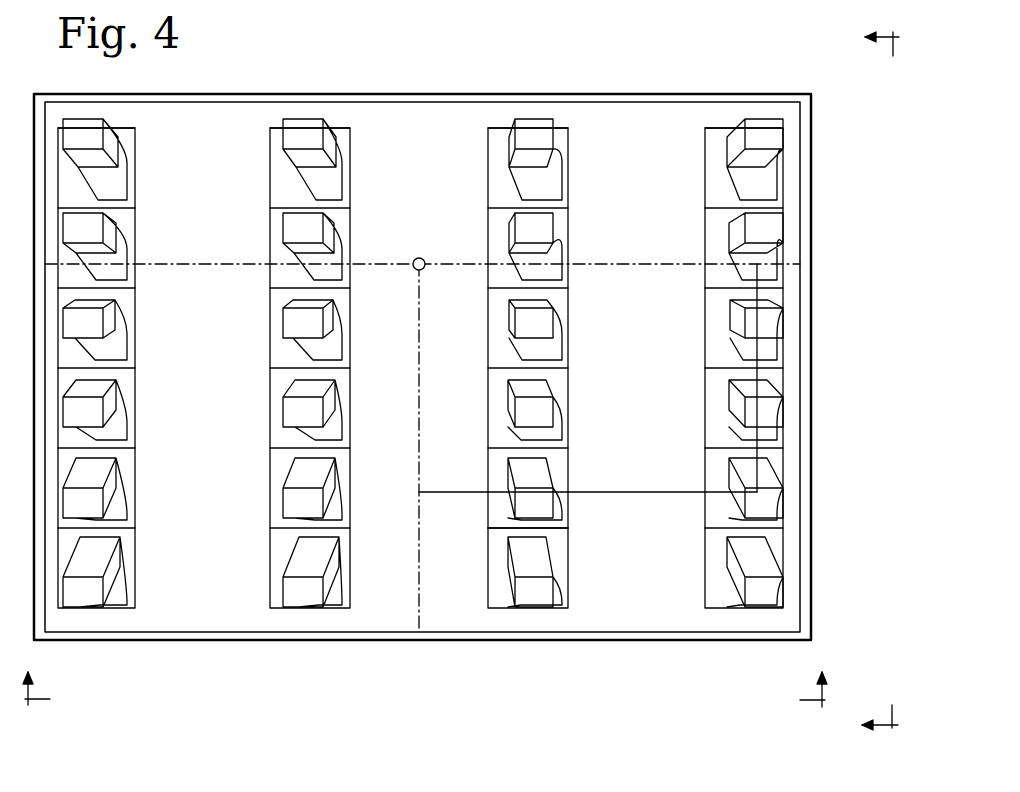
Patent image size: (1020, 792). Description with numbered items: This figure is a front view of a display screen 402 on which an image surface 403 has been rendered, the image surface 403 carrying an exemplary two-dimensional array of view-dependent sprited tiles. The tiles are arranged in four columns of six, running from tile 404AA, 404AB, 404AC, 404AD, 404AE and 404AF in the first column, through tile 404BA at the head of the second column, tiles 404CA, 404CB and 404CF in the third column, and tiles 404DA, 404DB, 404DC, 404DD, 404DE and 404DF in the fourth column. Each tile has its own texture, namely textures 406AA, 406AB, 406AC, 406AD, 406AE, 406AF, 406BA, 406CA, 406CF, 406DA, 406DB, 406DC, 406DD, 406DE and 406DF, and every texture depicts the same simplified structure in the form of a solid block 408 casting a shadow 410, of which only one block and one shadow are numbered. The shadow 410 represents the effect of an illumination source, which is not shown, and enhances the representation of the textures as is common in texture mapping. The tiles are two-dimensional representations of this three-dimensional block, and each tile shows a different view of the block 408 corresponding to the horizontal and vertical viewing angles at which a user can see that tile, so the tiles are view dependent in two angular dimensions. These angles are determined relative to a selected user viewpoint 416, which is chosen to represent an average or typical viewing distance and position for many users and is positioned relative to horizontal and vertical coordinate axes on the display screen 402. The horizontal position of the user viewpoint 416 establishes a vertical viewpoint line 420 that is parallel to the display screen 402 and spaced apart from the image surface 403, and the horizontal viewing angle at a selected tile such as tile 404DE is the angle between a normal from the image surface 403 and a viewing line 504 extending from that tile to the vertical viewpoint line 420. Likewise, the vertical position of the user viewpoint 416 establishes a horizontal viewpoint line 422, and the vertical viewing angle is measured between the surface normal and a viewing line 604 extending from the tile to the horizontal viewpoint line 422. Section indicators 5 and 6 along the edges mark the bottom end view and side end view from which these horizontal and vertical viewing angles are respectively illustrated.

The display screen 402 is at (285, 102).
The image surface 403 is at (225, 94).
The sprited tile 404AA is at (136, 163).
The sprited tile 404AB is at (136, 252).
The sprited tile 404AC is at (136, 342).
The sprited tile 404AD is at (136, 420).
The sprited tile 404AE is at (136, 500).
The sprited tile 404AF is at (136, 592).
The sprited tile 404BA is at (351, 163).
The sprited tile 404CA is at (569, 163).
The sprited tile 404CB is at (569, 236).
The sprited tile 404CF is at (569, 590).
The sprited tile 404DA is at (785, 162).
The sprited tile 404DB is at (785, 247).
The sprited tile 404DC is at (785, 300).
The sprited tile 404DD is at (785, 385).
The sprited tile 404DE is at (785, 478).
The sprited tile 404DF is at (785, 578).
The texture 406AA is at (99, 116).
The texture 406AB is at (104, 205).
The texture 406AC is at (104, 286).
The texture 406AD is at (104, 366).
The texture 406AE is at (104, 446).
The texture 406AF is at (104, 526).
The texture 406BA is at (313, 116).
The texture 406CA is at (531, 116).
The texture 406CF is at (530, 527).
The texture 406DA is at (756, 116).
The texture 406DB is at (768, 207).
The texture 406DC is at (768, 290).
The texture 406DD is at (768, 370).
The texture 406DE is at (768, 452).
The texture 406DF is at (768, 530).
The solid block 408 is at (552, 310).
The shadow 410 is at (550, 343).
The user viewpoint 416 is at (419, 258).
The vertical viewpoint line 420 is at (423, 400).
The horizontal viewpoint line 422 is at (641, 268).
The viewing line 504 is at (680, 491).
The viewing line 604 is at (757, 365).
The section 5-5 indicator 5 is at (425, 675).
The section 6-6 indicator 6 is at (869, 384).